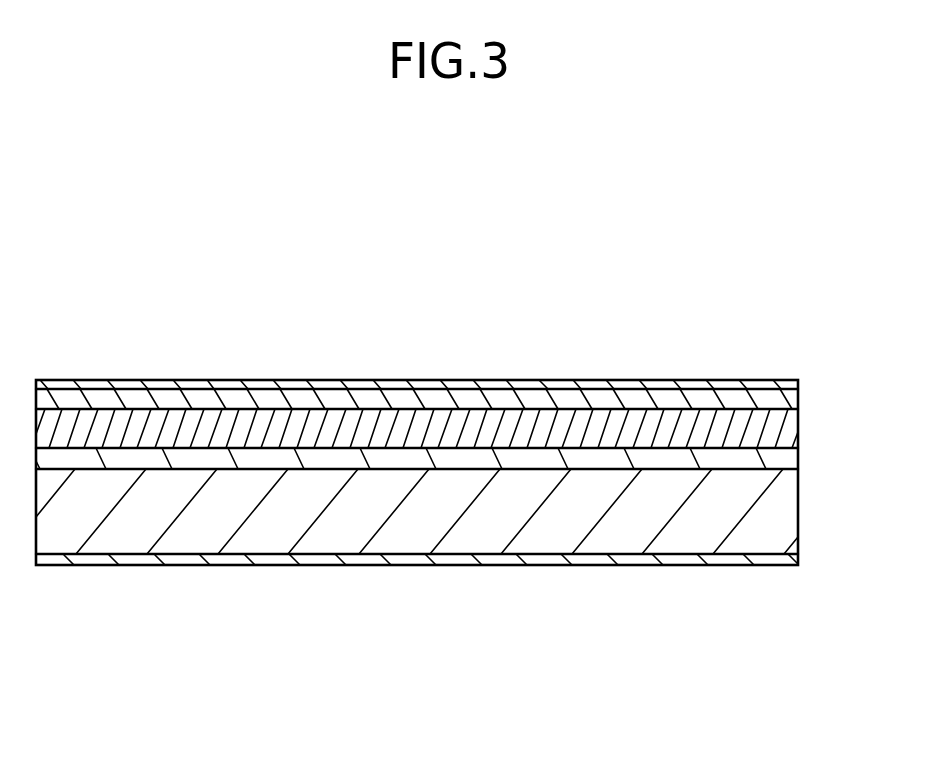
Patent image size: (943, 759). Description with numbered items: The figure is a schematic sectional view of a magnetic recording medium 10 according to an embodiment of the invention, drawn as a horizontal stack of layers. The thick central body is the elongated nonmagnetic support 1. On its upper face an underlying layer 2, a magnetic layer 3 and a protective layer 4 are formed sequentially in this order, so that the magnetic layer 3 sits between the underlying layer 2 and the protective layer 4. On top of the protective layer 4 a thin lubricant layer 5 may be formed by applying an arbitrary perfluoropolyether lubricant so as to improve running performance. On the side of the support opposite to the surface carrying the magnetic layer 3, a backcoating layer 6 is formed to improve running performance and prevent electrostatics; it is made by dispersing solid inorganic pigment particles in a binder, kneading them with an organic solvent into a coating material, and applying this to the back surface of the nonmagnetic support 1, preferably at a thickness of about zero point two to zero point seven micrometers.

The magnetic recording medium 10 is at (528, 698).
The nonmagnetic support 1 is at (773, 528).
The underlying layer 2 is at (803, 490).
The magnetic layer 3 is at (770, 433).
The protective layer 4 is at (778, 400).
The lubricant layer 5 is at (673, 380).
The backcoating layer 6 is at (677, 556).